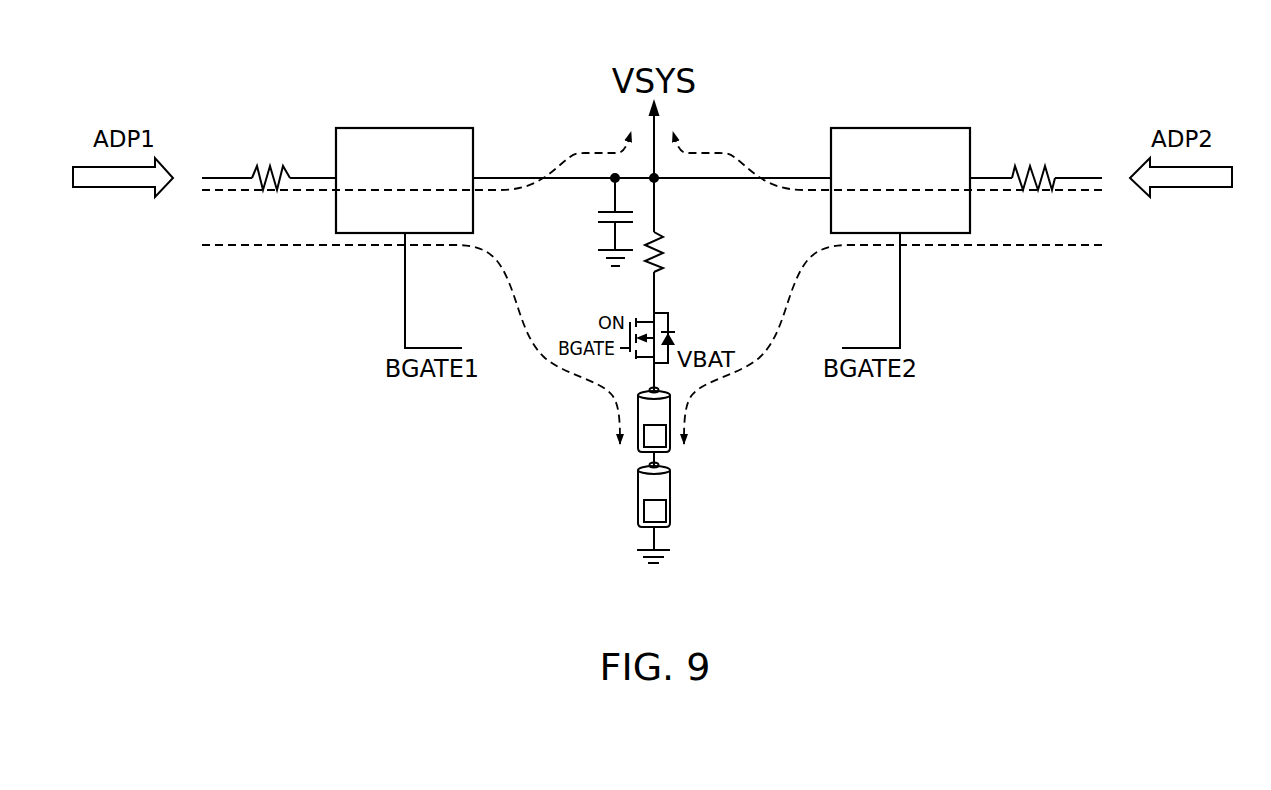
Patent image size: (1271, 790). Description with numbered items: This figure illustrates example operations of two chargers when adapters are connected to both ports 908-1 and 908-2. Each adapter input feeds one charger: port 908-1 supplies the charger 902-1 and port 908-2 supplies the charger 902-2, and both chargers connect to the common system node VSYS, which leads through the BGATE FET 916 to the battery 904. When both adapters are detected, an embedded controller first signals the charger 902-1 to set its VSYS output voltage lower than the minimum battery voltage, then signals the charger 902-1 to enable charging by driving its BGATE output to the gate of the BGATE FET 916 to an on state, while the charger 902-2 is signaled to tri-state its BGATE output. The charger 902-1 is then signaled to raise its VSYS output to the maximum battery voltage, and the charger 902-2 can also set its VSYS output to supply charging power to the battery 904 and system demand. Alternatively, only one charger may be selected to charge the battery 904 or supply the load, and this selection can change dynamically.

The charger 902-1 is at (400, 128).
The charger 902-2 is at (898, 128).
The port 908-1 is at (227, 151).
The port 908-2 is at (1085, 152).
The BGATE FET 916 is at (688, 321).
The battery 904 is at (613, 480).